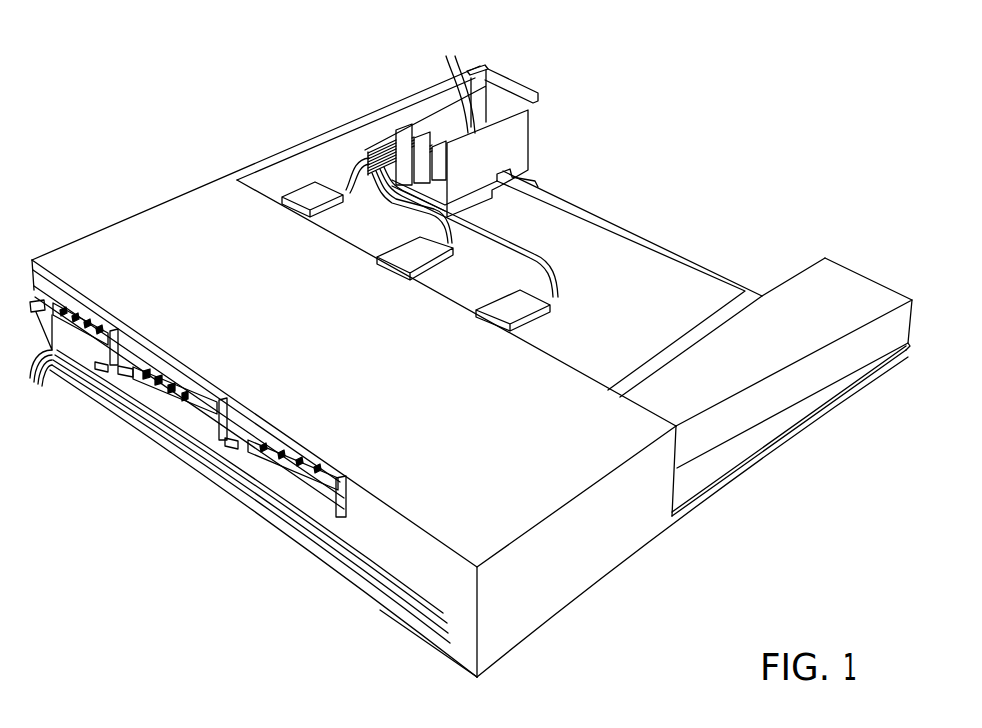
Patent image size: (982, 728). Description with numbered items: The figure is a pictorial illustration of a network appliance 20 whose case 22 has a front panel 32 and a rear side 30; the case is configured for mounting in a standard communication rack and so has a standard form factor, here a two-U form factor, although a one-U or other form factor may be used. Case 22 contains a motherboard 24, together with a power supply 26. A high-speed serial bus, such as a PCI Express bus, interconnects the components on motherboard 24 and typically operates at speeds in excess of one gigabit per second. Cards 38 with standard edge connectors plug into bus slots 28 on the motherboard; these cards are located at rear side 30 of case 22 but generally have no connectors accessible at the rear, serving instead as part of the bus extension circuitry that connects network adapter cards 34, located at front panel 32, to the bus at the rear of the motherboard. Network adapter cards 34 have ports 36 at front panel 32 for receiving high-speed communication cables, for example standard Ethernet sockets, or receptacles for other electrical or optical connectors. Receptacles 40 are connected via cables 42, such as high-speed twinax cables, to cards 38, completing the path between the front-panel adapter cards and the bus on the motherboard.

The network appliance 20 is at (95, 118).
The case 22 is at (350, 122).
The motherboard 24 is at (600, 238).
The power supply 26 is at (863, 273).
The bus slots 28 is at (542, 194).
The rear side 30 is at (703, 256).
The front panel 32 is at (457, 657).
The network adapter cards 34 is at (82, 310).
The ports 36 is at (33, 354).
The cards 38 is at (460, 83).
The receptacles 40 is at (412, 122).
The cables 42 is at (347, 170).